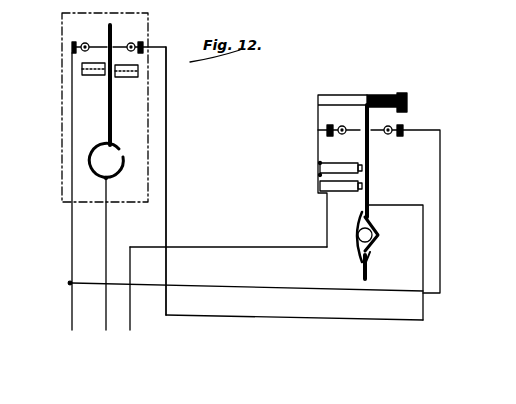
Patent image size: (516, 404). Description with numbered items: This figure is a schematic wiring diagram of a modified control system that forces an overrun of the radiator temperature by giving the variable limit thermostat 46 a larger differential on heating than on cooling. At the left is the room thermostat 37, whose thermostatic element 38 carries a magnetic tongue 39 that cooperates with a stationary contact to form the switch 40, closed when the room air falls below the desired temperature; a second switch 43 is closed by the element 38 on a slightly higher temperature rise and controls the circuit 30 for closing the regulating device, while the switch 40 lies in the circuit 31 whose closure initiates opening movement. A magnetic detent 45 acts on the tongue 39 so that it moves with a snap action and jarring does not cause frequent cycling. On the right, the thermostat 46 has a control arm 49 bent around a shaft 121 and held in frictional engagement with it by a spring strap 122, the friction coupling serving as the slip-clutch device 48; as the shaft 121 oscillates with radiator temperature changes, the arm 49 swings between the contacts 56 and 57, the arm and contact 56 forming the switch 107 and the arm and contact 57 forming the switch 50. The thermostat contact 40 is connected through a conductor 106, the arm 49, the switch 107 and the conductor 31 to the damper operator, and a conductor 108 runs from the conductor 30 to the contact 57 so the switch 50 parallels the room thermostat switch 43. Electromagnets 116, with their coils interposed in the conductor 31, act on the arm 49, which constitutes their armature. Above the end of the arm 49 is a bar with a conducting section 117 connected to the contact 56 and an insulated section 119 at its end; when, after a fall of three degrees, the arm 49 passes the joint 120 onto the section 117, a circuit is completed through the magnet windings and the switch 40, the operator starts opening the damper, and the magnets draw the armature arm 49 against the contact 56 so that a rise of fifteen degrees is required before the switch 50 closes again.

The circuit 30 is at (69, 228).
The circuit 31 is at (148, 246).
The thermostat 37 is at (150, 127).
The thermostatic element 38 is at (120, 171).
The tongue 39 is at (111, 107).
The switch 40 is at (113, 45).
The switch 43 is at (107, 44).
The magnetic detent 45 is at (90, 73).
The thermostat 46 is at (352, 247).
The device 48 is at (372, 243).
The control arm 49 is at (370, 162).
The switch 50 is at (373, 130).
The contact 56 is at (350, 134).
The contact 57 is at (386, 135).
The conductor 106 is at (168, 186).
The switch 107 is at (360, 128).
The conductor 108 is at (260, 286).
The electromagnets 116 is at (330, 165).
The conducting section 117 is at (330, 100).
The insulated section 119 is at (386, 94).
The joint 120 is at (368, 95).
The shaft 121 is at (376, 237).
The spring strap 122 is at (360, 222).